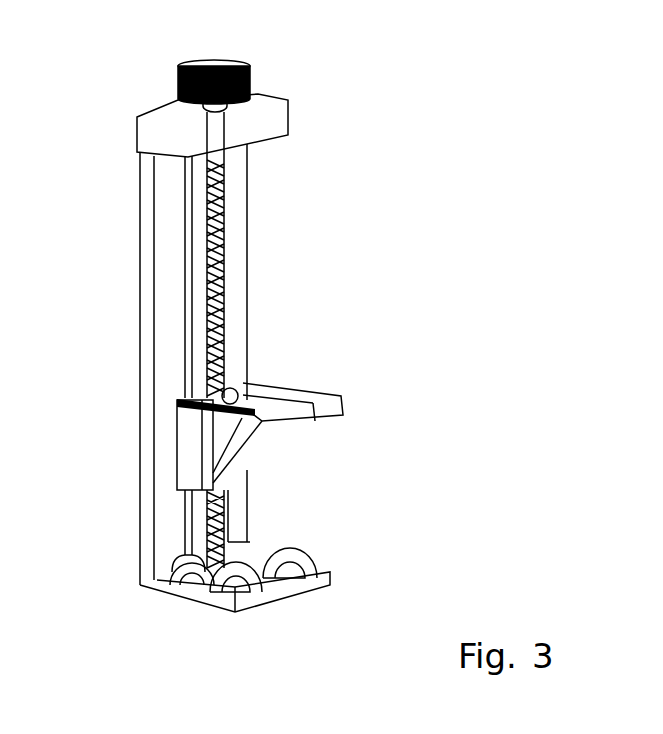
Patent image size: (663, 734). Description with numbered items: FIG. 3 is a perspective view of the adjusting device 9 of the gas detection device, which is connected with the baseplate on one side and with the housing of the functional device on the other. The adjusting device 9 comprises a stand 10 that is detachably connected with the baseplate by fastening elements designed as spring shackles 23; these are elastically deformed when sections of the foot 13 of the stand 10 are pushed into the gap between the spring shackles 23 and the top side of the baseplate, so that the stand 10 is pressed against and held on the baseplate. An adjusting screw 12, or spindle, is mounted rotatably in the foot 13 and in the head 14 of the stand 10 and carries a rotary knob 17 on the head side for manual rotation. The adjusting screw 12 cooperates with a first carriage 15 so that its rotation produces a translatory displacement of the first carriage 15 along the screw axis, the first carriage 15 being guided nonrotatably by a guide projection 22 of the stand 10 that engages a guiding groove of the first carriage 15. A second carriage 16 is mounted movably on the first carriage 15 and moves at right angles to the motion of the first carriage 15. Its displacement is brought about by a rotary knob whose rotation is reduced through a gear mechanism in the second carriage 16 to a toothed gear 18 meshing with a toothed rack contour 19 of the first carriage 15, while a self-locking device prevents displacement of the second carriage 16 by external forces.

The adjusting device 9 is at (318, 213).
The stand 10 is at (162, 262).
The adjusting screw 12 is at (196, 340).
The foot 13 is at (147, 593).
The head 14 is at (178, 141).
The first carriage 15 is at (193, 420).
The second carriage 16 is at (295, 391).
The rotary knob 17 is at (207, 62).
The toothed gear 18 is at (238, 391).
The toothed rack contour 19 is at (205, 389).
The guide projection 22 is at (190, 313).
The spring shackles 23 is at (303, 562).